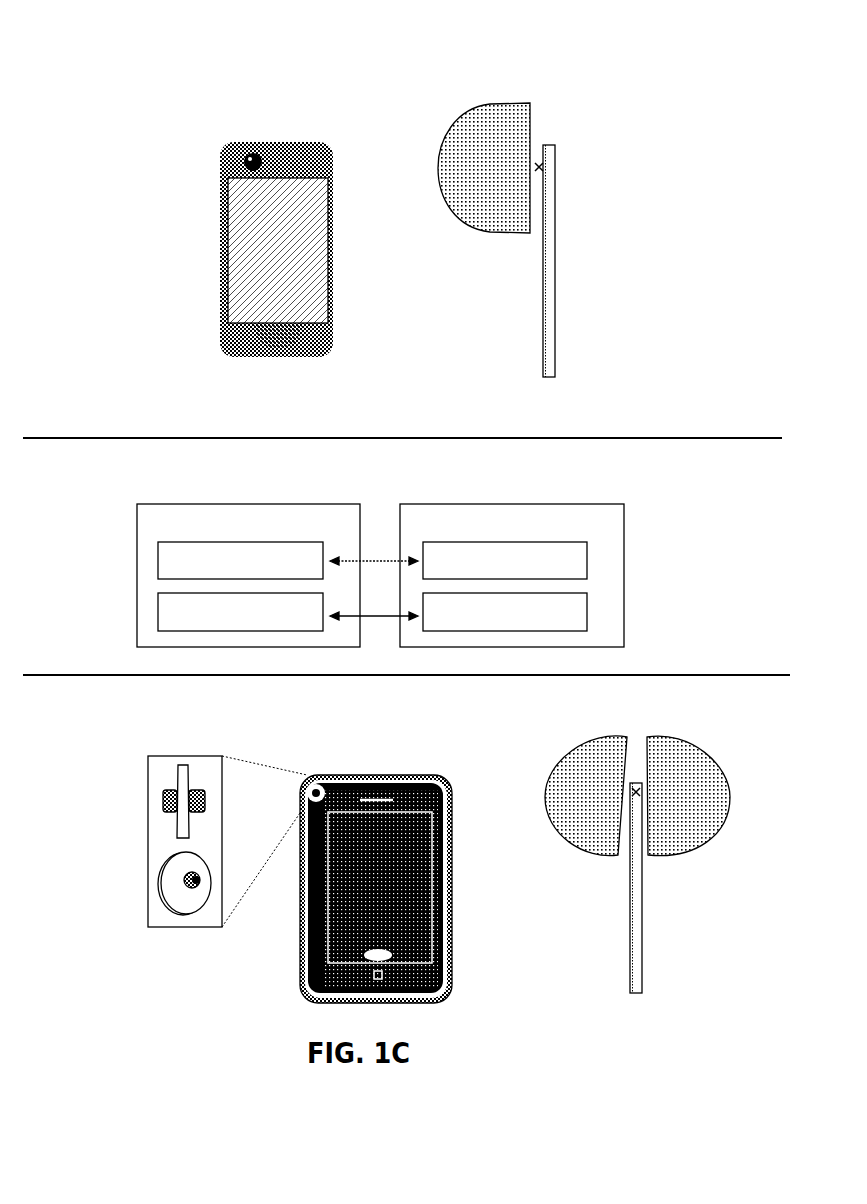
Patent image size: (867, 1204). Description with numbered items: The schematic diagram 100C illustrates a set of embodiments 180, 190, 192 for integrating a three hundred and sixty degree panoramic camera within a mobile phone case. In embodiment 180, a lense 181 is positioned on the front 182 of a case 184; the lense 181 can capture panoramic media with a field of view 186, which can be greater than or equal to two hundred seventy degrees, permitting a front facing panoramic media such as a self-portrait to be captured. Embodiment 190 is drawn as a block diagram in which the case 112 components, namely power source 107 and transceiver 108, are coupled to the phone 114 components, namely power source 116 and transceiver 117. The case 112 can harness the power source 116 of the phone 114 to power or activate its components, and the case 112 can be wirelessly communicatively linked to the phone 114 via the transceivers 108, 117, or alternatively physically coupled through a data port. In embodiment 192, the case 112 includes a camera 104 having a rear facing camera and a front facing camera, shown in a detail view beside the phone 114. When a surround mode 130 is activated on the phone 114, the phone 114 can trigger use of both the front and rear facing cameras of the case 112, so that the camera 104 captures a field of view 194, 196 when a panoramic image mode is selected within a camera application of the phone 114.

The schematic diagram 100C is at (742, 25).
The embodiment 180 is at (174, 57).
The lense 181 is at (246, 157).
The front 182 is at (247, 357).
The case 184 is at (321, 357).
The field of view 186 is at (502, 173).
The embodiment 190 is at (174, 481).
The case 112 is at (636, 978).
The phone 114 is at (472, 968).
The power source 107 is at (240, 560).
The transceiver 108 is at (240, 612).
The power source 116 is at (505, 560).
The transceiver 117 is at (505, 612).
The embodiment 192 is at (174, 718).
The panoramic camera 104 is at (178, 786).
The surround mode 130 is at (364, 903).
The field of view 194 is at (599, 802).
The field of view 196 is at (689, 802).